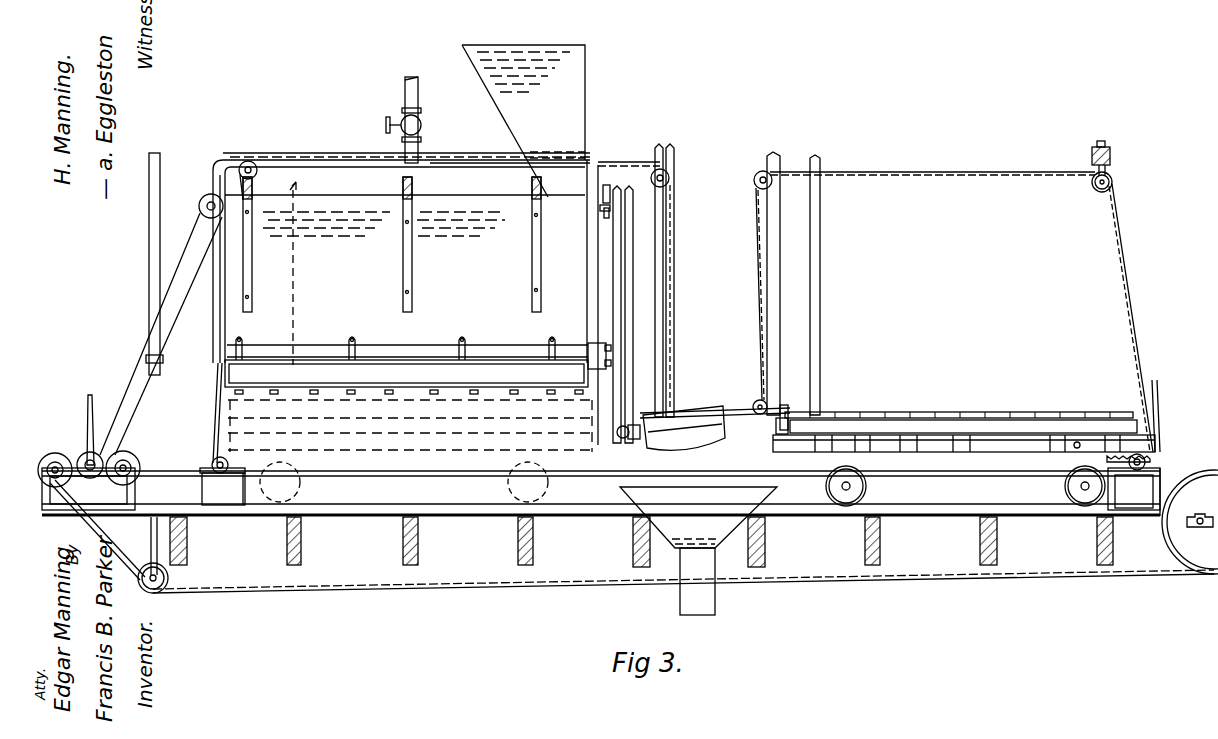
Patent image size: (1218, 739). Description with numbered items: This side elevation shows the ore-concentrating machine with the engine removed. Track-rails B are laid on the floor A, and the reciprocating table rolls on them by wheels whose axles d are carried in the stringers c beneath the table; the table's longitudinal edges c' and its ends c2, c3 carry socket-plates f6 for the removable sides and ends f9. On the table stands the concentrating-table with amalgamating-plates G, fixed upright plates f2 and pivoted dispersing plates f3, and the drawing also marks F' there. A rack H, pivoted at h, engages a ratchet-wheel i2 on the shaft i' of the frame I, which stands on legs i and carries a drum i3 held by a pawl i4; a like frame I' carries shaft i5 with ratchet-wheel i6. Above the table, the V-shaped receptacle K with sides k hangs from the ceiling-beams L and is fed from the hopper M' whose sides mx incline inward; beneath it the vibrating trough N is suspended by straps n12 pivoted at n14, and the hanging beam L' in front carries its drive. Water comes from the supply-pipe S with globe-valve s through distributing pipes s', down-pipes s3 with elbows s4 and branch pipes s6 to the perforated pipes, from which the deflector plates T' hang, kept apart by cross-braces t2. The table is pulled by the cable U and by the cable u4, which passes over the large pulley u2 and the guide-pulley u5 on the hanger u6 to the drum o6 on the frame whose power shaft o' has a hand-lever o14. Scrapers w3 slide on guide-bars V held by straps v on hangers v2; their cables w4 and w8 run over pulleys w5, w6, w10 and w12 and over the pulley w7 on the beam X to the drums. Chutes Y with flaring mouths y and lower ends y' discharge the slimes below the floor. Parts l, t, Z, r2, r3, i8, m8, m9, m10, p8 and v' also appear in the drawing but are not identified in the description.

The track-rails B is at (963, 510).
The floor A is at (843, 517).
The cable u4 is at (812, 580).
The guide-pulley u5 is at (168, 575).
The hanger u6 is at (150, 545).
The drum o6 is at (58, 453).
The power-driven shaft o' is at (97, 516).
The hand-lever o14 is at (91, 395).
The hanging beam L' is at (138, 264).
The rope pulley r2 is at (199, 206).
The rope guide r3 is at (149, 316).
The downwardly-extending pipes s3 is at (213, 298).
The elbows s4 is at (216, 366).
The main receptacle or trough K is at (330, 240).
The sides of the receptacle k is at (366, 277).
The indicator Z is at (248, 188).
The water-distributing pipes s' is at (406, 145).
The branch pipes s6 is at (456, 158).
The main supply-pipe S is at (418, 102).
The globe-valve s is at (383, 114).
The hopper M' is at (523, 104).
The sides of the hopper mx is at (470, 60).
The hanging rods l is at (397, 244).
The ceiling-beams L is at (521, 181).
The guide-pulley w12 is at (250, 162).
The vibrating trough or sifter N is at (412, 356).
The suspending-straps n12 is at (478, 340).
The pivots n14 is at (241, 338).
The tray T' is at (406, 373).
The tray lugs t is at (395, 396).
The cross-braces t2 is at (410, 400).
The cable U is at (452, 476).
The transverse shaft i5 is at (223, 489).
The frame I' is at (188, 495).
The ratchet-wheel i6 is at (212, 462).
The bearing plate i8 is at (232, 468).
The removable sides and ends f9 is at (216, 410).
The bracket m9 is at (611, 192).
The stop m8 is at (606, 218).
The bracket m10 is at (600, 370).
The lever p8 is at (597, 404).
The hanging beams or shaft-hangers v2 is at (716, 293).
The cable w8 is at (640, 162).
The pulley w10 is at (669, 176).
The pulley w6 is at (754, 184).
The cable w4 is at (965, 176).
The pulley w7 is at (1091, 185).
The horizontal beam X is at (1140, 133).
The guide-bars V is at (790, 408).
The scraper w3 is at (800, 393).
The pulley w5 is at (758, 400).
The straps v is at (633, 445).
The pivot bracket v' is at (768, 426).
The end of the table c2 is at (772, 440).
The carriage frame F' is at (961, 409).
The stringers or beams c is at (964, 452).
The longitudinal edges c' is at (890, 461).
The rear end of the table c3 is at (1158, 440).
The upright plates f2 is at (922, 412).
The material-dispersing pivoted plates f3 is at (878, 412).
The socket-plates f6 is at (1000, 452).
The amalgamating-plates G is at (1030, 420).
The pivot h is at (1078, 434).
The axles d is at (866, 487).
The rack H is at (1075, 458).
The drum i3 is at (1140, 470).
The pawl i4 is at (1106, 462).
The ratchet-wheel i2 is at (1160, 462).
The shaft-supporting frame I is at (1134, 489).
The legs i is at (1121, 489).
The shaft i' is at (1167, 494).
The large cable-pulley u2 is at (1165, 540).
The discharge-chutes Y is at (698, 517).
The flaring upper ends y is at (633, 529).
The lower ends of the chutes y' is at (675, 581).